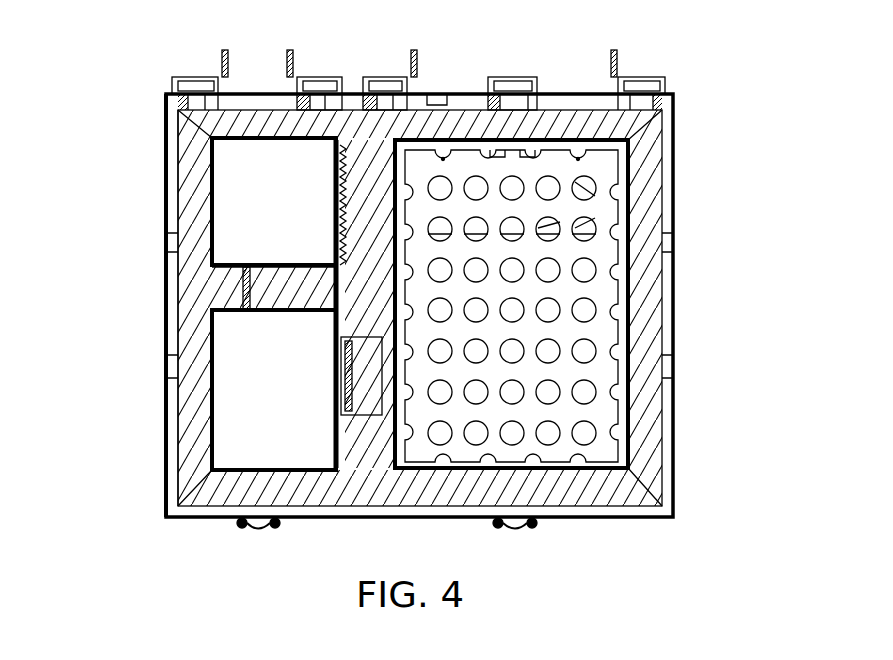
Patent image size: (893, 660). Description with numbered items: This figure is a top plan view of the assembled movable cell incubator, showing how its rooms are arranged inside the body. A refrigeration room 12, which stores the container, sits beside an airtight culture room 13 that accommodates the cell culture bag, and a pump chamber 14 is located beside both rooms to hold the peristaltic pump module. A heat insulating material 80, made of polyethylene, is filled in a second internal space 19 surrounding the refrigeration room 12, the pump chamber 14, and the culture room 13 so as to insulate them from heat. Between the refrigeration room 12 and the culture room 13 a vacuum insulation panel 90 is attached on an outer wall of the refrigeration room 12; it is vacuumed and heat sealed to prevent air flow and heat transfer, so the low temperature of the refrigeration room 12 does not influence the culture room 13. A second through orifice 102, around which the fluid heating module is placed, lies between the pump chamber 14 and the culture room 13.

The refrigeration room 12 is at (238, 193).
The culture room 13 is at (584, 290).
The pump chamber 14 is at (238, 435).
The second internal space 19 is at (680, 212).
The heat insulating material 80 is at (178, 345).
The vacuum insulation panel 90 is at (331, 188).
The second through orifice 102 is at (388, 400).